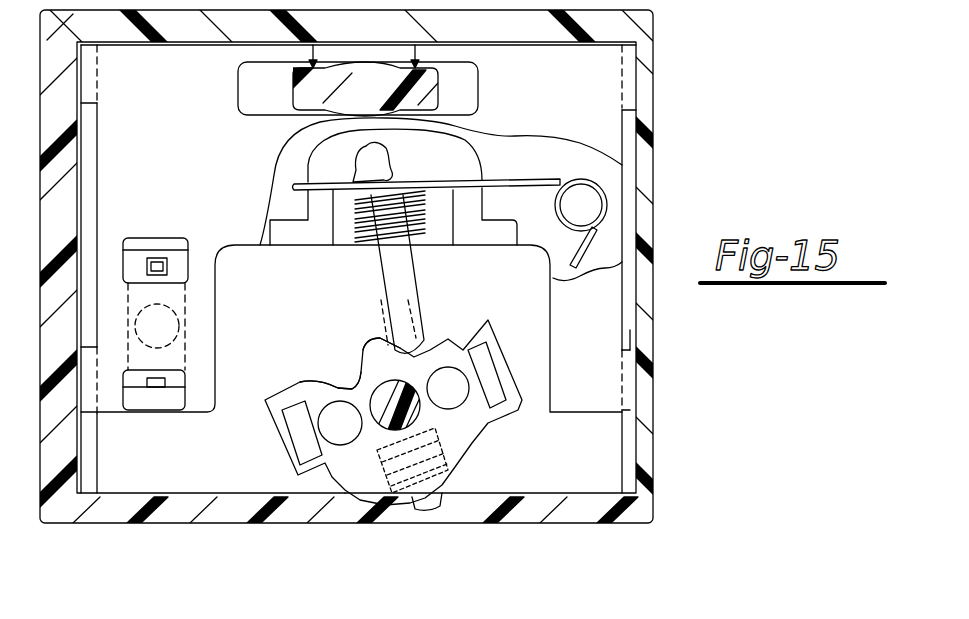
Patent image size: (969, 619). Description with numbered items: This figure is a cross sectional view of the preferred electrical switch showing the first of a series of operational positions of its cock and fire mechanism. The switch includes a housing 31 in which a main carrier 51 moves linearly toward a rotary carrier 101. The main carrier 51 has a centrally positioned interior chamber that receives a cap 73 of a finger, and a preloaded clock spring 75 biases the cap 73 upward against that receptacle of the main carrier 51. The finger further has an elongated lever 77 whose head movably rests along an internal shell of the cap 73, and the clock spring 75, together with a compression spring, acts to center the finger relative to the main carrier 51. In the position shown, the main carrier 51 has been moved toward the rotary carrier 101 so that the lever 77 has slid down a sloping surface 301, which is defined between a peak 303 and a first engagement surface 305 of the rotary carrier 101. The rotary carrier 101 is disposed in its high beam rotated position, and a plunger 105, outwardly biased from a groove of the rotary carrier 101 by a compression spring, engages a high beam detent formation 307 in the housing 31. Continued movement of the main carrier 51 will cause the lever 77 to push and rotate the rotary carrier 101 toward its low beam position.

The housing 31 is at (113, 503).
The main carrier 51 is at (130, 132).
The cap 73 is at (385, 152).
The clock spring 75 is at (520, 180).
The lever 77 is at (427, 337).
The rotary carrier 101 is at (297, 475).
The plunger 105 is at (417, 517).
The sloping surface 301 is at (390, 347).
The peak 303 is at (368, 340).
The first engagement surface 305 is at (437, 330).
The high beam detent formation 307 is at (427, 503).